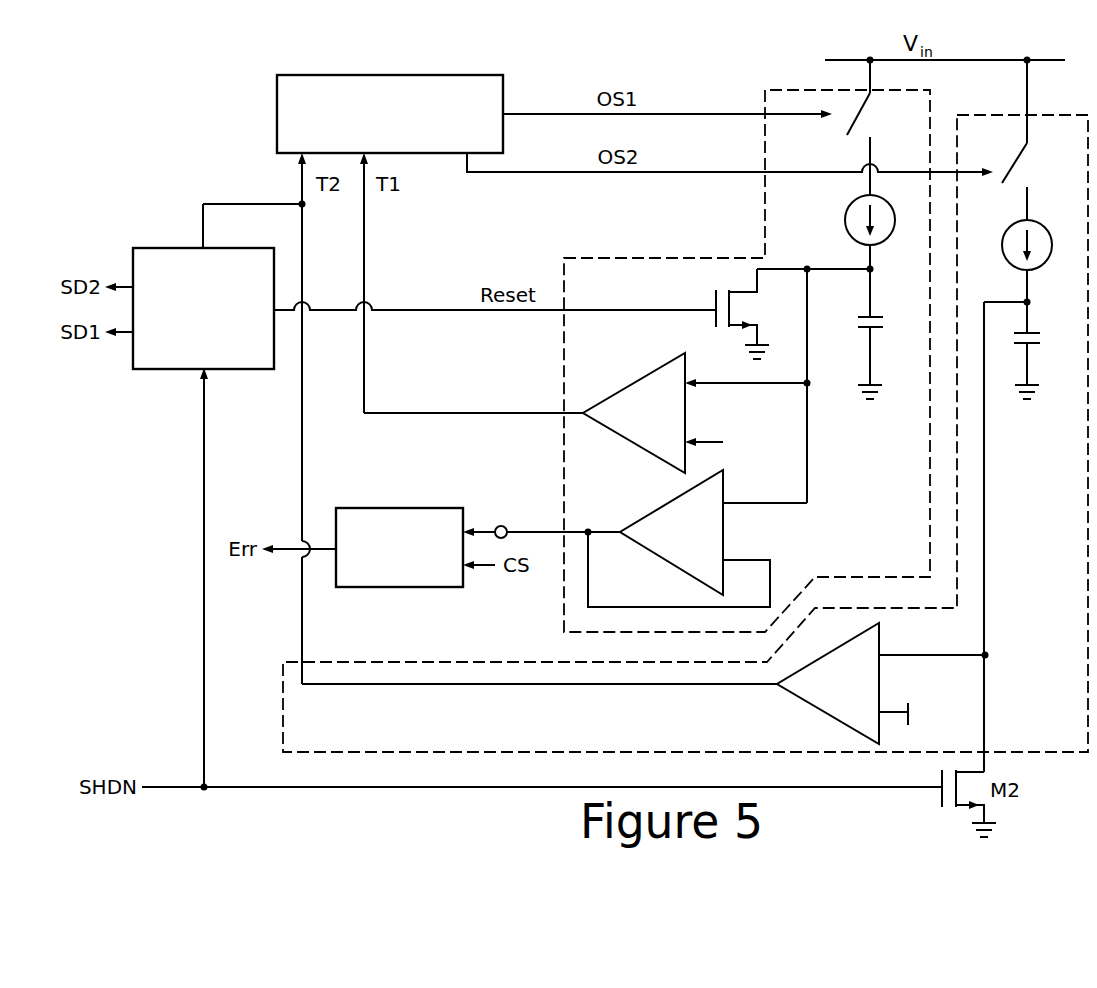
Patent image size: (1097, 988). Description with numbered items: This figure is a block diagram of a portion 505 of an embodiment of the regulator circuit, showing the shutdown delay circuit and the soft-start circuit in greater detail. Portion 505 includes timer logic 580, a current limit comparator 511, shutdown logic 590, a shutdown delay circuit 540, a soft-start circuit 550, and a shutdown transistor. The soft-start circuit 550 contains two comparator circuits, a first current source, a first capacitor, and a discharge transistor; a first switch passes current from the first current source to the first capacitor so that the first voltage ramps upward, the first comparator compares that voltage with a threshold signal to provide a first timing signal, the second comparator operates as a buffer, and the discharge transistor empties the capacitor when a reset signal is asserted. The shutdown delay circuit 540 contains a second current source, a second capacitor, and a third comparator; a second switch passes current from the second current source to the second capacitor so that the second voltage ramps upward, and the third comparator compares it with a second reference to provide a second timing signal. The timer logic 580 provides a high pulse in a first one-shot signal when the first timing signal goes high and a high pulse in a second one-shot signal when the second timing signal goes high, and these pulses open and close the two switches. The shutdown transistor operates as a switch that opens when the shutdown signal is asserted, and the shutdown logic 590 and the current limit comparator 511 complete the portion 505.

The portion of regulator circuit 505 is at (716, 62).
The current limit comparator 511 is at (383, 575).
The shutdown delay circuit 540 is at (1046, 461).
The soft-start circuit 550 is at (631, 349).
The timer logic 580 is at (371, 138).
The shutdown logic 590 is at (185, 352).